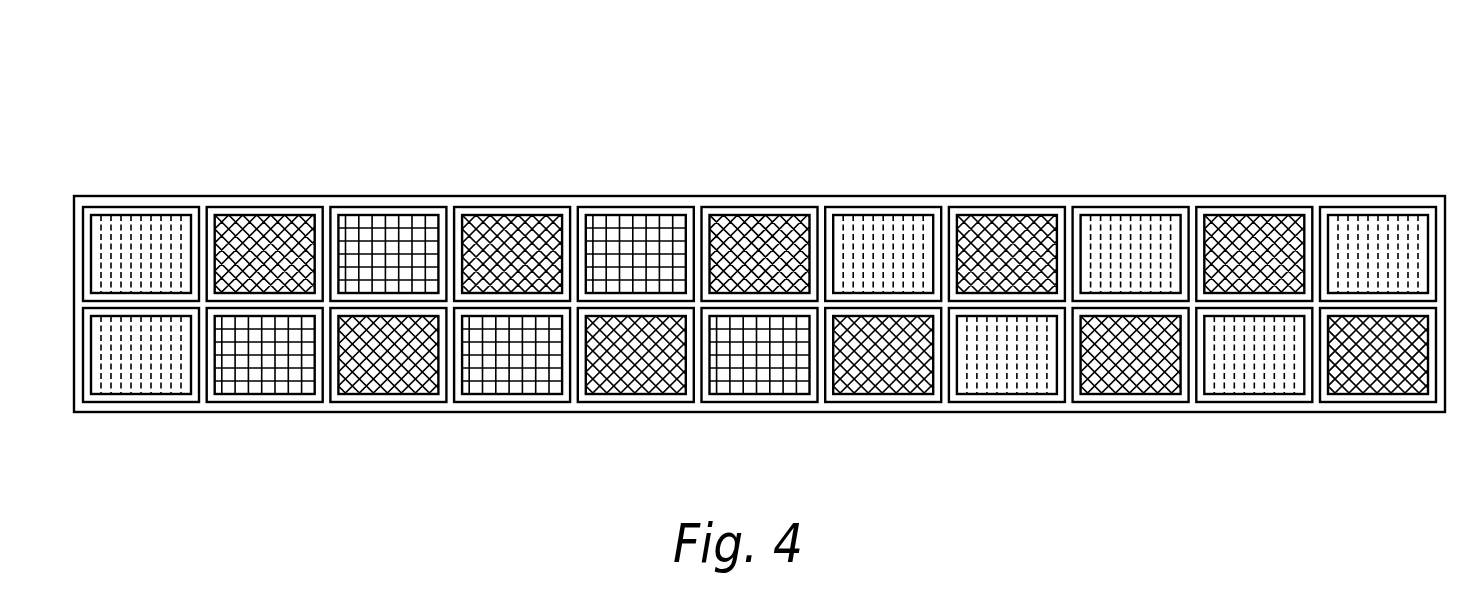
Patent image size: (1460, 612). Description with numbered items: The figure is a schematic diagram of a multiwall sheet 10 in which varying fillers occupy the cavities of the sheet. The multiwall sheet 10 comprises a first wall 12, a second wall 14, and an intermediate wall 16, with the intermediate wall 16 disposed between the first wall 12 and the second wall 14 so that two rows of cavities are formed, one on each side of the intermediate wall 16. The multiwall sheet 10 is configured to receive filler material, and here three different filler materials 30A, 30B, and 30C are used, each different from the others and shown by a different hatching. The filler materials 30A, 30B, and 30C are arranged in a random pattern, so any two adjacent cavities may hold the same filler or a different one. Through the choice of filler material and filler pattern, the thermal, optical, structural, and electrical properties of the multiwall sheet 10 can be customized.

The multiwall sheet 10 is at (1068, 102).
The first wall 12 is at (502, 198).
The second wall 14 is at (406, 405).
The intermediate wall 16 is at (638, 307).
The filler material 30A is at (645, 260).
The filler material 30B is at (768, 258).
The filler material 30C is at (892, 262).